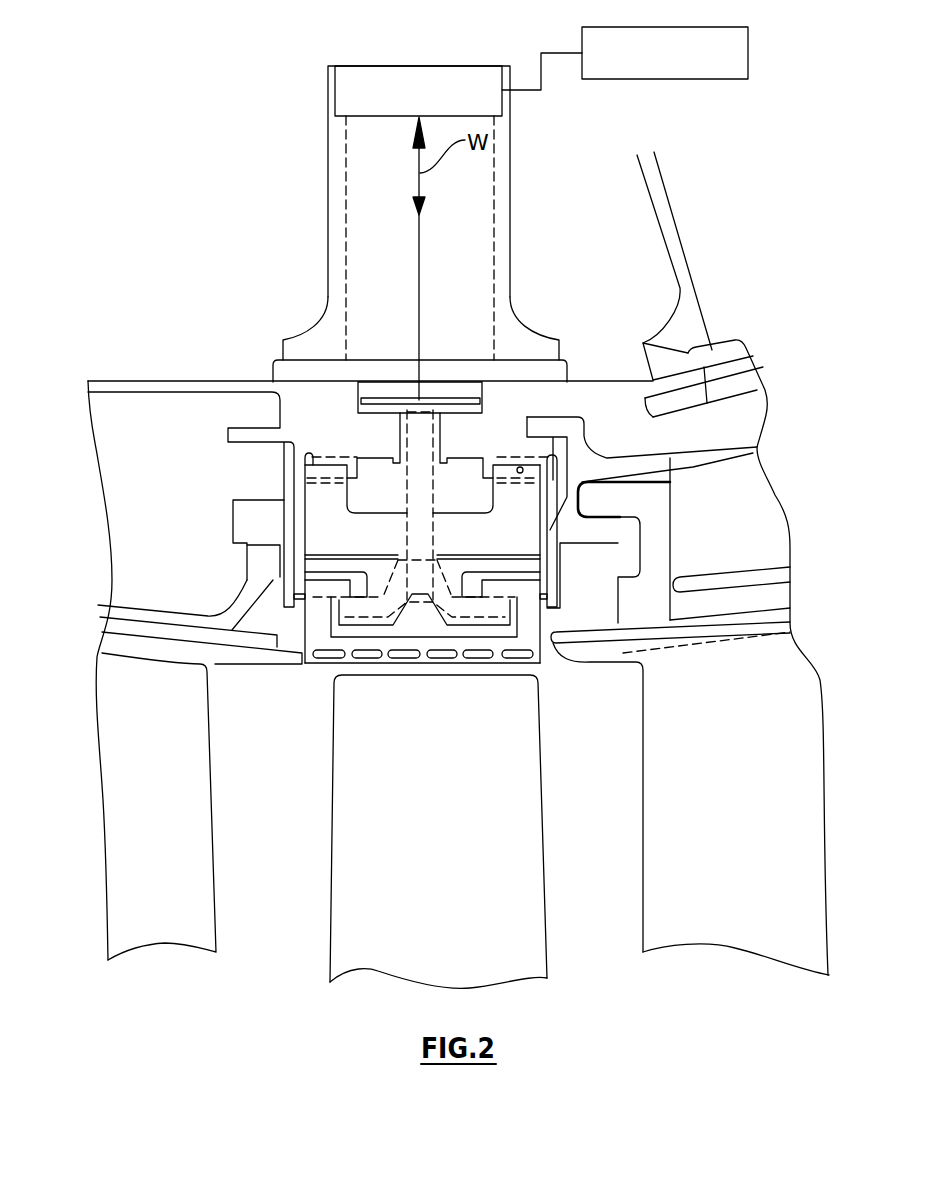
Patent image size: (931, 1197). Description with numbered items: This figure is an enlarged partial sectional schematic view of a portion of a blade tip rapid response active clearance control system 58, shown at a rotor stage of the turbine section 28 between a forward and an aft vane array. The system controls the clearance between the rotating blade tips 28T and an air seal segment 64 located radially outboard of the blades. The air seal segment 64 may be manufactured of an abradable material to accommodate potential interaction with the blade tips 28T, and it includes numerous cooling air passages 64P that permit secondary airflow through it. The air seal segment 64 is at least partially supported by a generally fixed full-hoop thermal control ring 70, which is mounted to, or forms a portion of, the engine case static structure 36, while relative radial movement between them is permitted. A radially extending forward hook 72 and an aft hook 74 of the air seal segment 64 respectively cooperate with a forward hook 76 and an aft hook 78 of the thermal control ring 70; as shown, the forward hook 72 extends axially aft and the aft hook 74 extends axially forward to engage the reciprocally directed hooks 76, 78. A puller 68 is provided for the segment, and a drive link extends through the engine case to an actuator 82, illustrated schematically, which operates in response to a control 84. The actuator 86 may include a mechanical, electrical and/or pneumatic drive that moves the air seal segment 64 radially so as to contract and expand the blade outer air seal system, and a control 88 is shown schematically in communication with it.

The actuator 86 is at (375, 65).
The control 88 is at (748, 53).
The blade tip rapid response active clearance control system 58 is at (688, 198).
The turbine section 28 is at (802, 197).
The engine case static structure 36 is at (150, 378).
The control 84 is at (213, 380).
The full-hoop thermal control ring 70 is at (325, 472).
The forward hook 72 is at (353, 590).
The actuator 82 is at (422, 533).
The aft hook 74 is at (540, 590).
The forward hook 76 is at (320, 615).
The aft hook 78 is at (510, 607).
The air seal segment 64 is at (345, 660).
The cooling air passages 64P is at (360, 657).
The puller 68 is at (493, 612).
The blade tips 28T is at (450, 675).